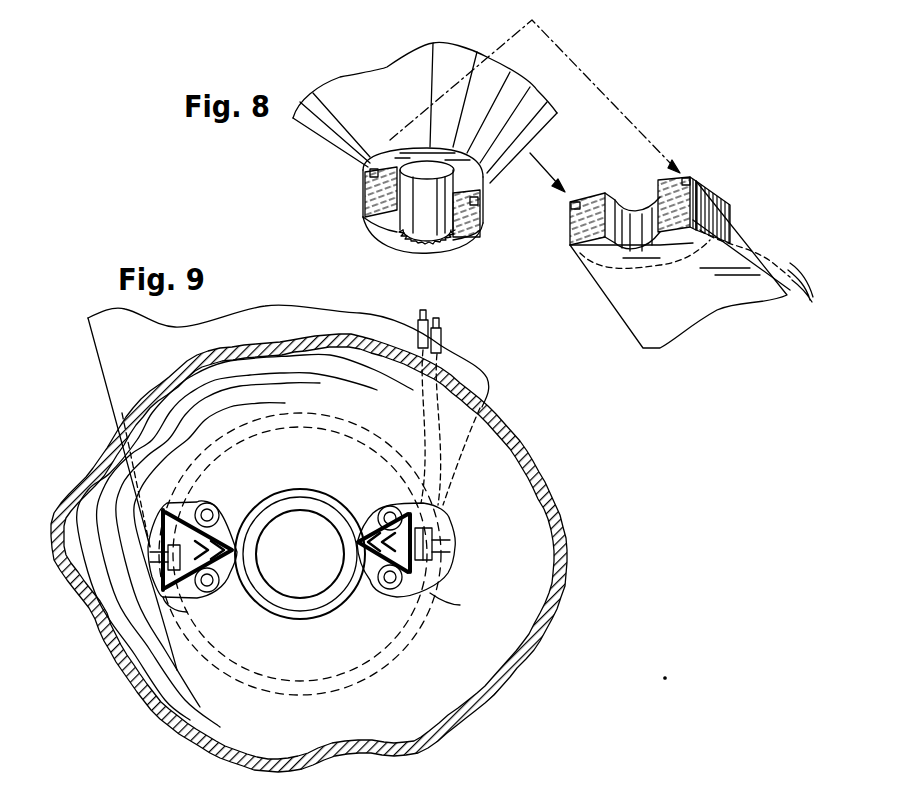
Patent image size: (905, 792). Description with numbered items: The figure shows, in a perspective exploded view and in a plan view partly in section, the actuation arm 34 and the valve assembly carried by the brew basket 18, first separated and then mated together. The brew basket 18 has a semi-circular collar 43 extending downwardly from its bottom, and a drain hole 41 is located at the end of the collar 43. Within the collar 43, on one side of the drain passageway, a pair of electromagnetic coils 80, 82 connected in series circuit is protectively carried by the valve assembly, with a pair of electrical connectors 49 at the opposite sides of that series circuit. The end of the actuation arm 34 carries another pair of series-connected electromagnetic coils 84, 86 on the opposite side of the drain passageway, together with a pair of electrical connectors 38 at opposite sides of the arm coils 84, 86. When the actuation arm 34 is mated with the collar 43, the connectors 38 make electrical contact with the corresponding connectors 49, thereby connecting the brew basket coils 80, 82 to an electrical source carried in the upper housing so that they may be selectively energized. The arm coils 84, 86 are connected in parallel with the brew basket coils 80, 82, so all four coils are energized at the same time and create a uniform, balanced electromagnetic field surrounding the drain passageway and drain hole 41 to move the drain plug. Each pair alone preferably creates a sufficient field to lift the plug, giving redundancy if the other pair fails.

In FIG. 8, the brew basket 18 is at (323, 133).
In FIG. 9, the brew basket 18 is at (483, 660).
In FIG. 8, the actuation arm 34 is at (720, 297).
In FIG. 8, the electrical connectors 38 is at (570, 203).
In FIG. 9, the electrical connectors 38 is at (150, 547).
In FIG. 8, the drain hole 41 is at (368, 222).
In FIG. 8, the semi-circular collar 43 is at (397, 245).
In FIG. 8, the electrical connectors 49 is at (373, 173).
In FIG. 9, the electrical connectors 49 is at (177, 562).
In FIG. 9, the electromagnetic coil 80 is at (390, 590).
In FIG. 9, the electromagnetic coil 82 is at (187, 612).
In FIG. 9, the electromagnetic coil 84 is at (197, 507).
In FIG. 9, the electromagnetic coil 86 is at (410, 507).